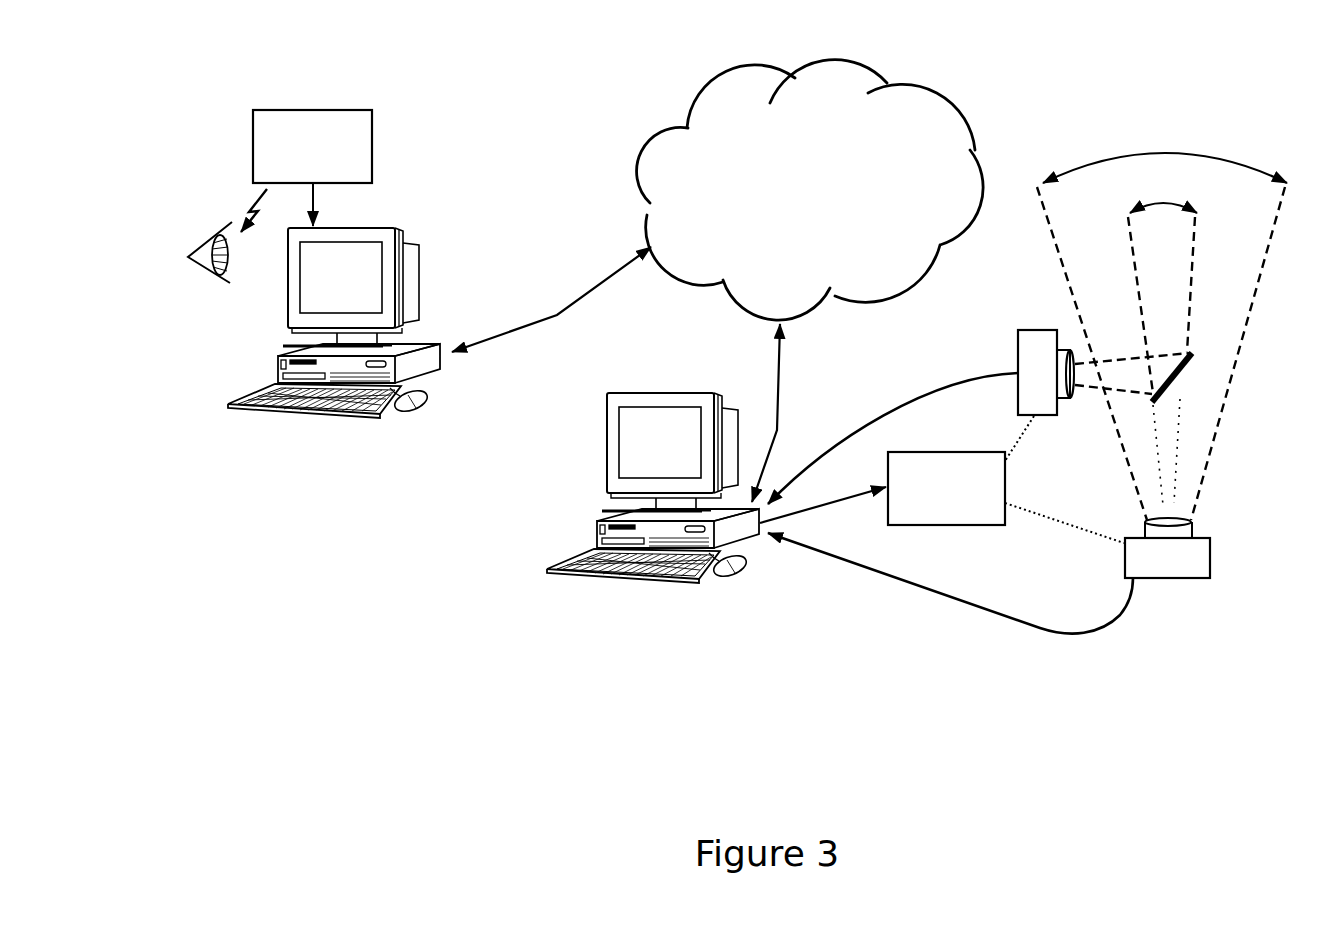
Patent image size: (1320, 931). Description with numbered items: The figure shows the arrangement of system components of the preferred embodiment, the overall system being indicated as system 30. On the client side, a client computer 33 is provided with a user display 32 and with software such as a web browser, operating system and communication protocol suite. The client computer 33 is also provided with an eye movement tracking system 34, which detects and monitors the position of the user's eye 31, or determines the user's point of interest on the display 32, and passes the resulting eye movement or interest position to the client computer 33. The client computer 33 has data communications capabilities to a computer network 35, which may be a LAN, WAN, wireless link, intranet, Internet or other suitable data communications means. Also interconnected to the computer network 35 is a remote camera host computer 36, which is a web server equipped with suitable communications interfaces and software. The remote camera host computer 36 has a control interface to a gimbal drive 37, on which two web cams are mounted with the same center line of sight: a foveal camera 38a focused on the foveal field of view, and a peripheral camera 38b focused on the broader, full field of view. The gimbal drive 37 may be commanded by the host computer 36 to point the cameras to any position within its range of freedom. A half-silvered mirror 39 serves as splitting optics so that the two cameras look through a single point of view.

The foveated camera system 30 is at (1180, 65).
The user's eye 31 is at (187, 243).
The user display 32 is at (420, 272).
The client computer 33 is at (277, 355).
The eye movement tracking system 34 is at (253, 160).
The computer network 35 is at (695, 101).
The remote camera host computer 36 is at (670, 393).
The gimbal drive 37 is at (930, 525).
The foveal camera 38a is at (1018, 345).
The peripheral camera 38b is at (1125, 555).
The half-silvered mirror 39 is at (1174, 375).